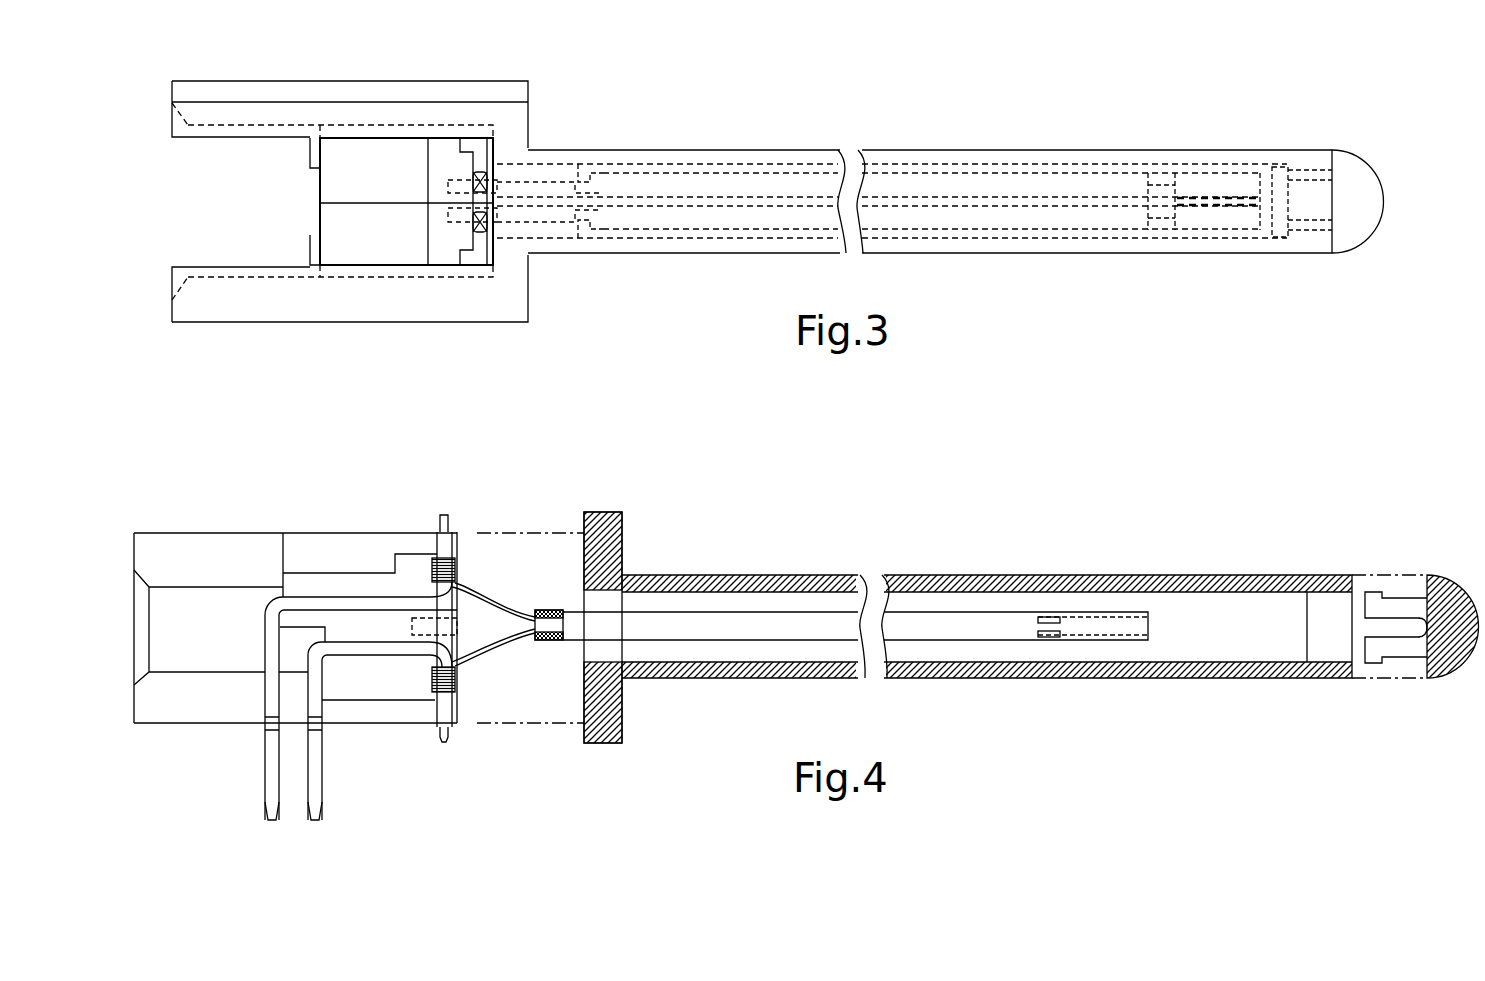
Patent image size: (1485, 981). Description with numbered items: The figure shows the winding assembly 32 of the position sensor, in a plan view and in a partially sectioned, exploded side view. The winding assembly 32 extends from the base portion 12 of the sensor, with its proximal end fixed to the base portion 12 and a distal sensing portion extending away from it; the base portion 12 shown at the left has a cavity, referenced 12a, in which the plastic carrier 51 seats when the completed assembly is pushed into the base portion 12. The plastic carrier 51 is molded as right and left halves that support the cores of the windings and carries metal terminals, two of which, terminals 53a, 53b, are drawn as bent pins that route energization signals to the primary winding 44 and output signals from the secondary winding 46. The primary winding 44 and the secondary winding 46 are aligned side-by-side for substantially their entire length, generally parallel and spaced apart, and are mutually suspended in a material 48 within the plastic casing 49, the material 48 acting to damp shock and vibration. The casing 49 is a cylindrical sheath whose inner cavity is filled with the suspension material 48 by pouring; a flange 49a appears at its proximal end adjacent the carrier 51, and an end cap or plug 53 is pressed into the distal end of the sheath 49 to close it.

In FIG. 3, the base portion 12 is at (357, 90).
In FIG. 4, the base portion 12 is at (197, 565).
In FIG. 3, the housing cavity 12a is at (188, 197).
In FIG. 3, the winding assembly 32 is at (728, 150).
In FIG. 4, the winding assembly 32 is at (1047, 680).
In FIG. 3, the primary winding 44 is at (935, 185).
In FIG. 3, the secondary winding 46 is at (985, 222).
In FIG. 4, the secondary winding 46 is at (960, 625).
In FIG. 3, the suspension material 48 is at (1263, 170).
In FIG. 4, the plastic casing 49 is at (975, 572).
In FIG. 4, the sleeve flange 49a is at (622, 548).
In FIG. 3, the plastic carrier 51 is at (338, 190).
In FIG. 4, the plastic carrier 51 is at (337, 547).
In FIG. 3, the end cap or plug 53 is at (1350, 220).
In FIG. 4, the end cap or plug 53 is at (1450, 665).
In FIG. 4, the metal terminal 53a is at (315, 765).
In FIG. 4, the metal terminal 53b is at (272, 763).